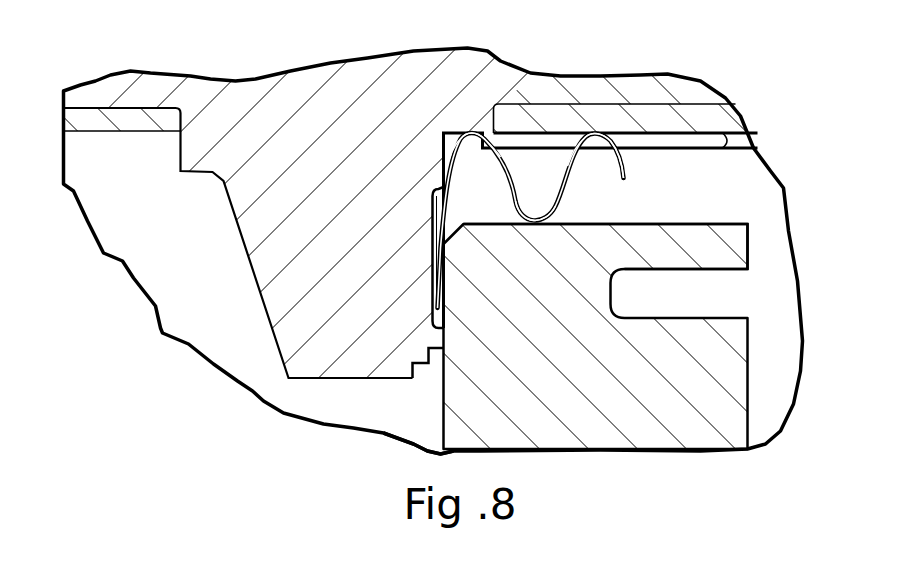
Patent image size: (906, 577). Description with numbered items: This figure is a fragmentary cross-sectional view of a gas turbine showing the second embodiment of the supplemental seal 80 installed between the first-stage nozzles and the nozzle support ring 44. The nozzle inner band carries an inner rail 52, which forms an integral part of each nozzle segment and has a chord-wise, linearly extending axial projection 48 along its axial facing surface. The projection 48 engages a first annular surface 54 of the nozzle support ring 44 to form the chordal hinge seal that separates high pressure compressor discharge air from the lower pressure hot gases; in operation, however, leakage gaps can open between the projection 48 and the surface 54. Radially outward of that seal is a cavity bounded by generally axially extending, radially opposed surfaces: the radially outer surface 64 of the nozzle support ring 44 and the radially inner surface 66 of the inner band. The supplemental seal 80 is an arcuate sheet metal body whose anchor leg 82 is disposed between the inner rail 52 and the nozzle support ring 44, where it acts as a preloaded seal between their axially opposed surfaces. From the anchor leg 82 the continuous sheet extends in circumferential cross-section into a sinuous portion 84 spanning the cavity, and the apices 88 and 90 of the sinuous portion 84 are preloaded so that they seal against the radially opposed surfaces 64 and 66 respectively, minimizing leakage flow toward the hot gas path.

The nozzle support ring 44 is at (657, 433).
The axial projection 48 is at (435, 347).
The inner rail 52 is at (267, 213).
The first annular surface 54 is at (440, 423).
The radially outer surface of the nozzle support ring 64 is at (695, 222).
The radially inner surface of the inner band 66 is at (727, 147).
The supplemental seal 80 is at (427, 180).
The anchor leg 82 is at (432, 257).
The sinuous portion 84 is at (568, 190).
The apex 88 is at (477, 128).
The apex 90 is at (540, 226).